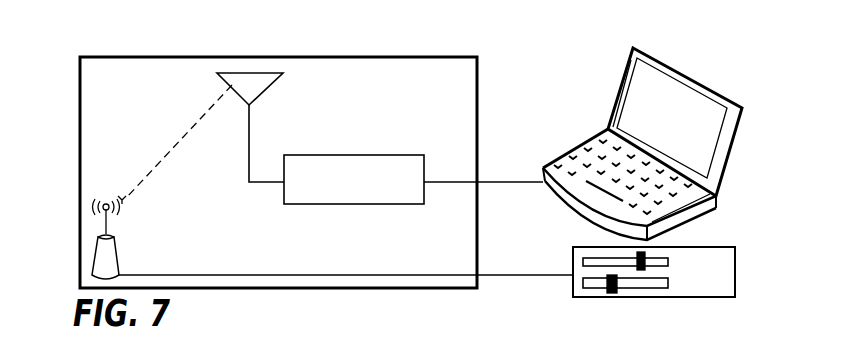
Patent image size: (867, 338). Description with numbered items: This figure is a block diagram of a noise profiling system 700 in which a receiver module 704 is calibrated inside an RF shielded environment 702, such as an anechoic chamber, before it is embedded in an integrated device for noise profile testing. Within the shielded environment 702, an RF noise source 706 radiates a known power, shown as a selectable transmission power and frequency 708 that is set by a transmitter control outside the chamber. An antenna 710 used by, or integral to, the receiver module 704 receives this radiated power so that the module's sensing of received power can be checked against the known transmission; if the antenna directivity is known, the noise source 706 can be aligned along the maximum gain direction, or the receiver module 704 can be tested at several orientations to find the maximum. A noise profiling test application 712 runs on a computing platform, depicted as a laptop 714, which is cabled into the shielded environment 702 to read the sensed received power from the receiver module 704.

The noise profiling system 700 is at (642, 170).
The RF shielded environment 702 is at (477, 74).
The receiver module 704 is at (354, 179).
The RF noise source 706 is at (92, 257).
The selectable transmission power and frequency 708 is at (654, 272).
The antenna 710 is at (268, 90).
The noise profiling test application 712 is at (675, 99).
The laptop 714 is at (683, 98).